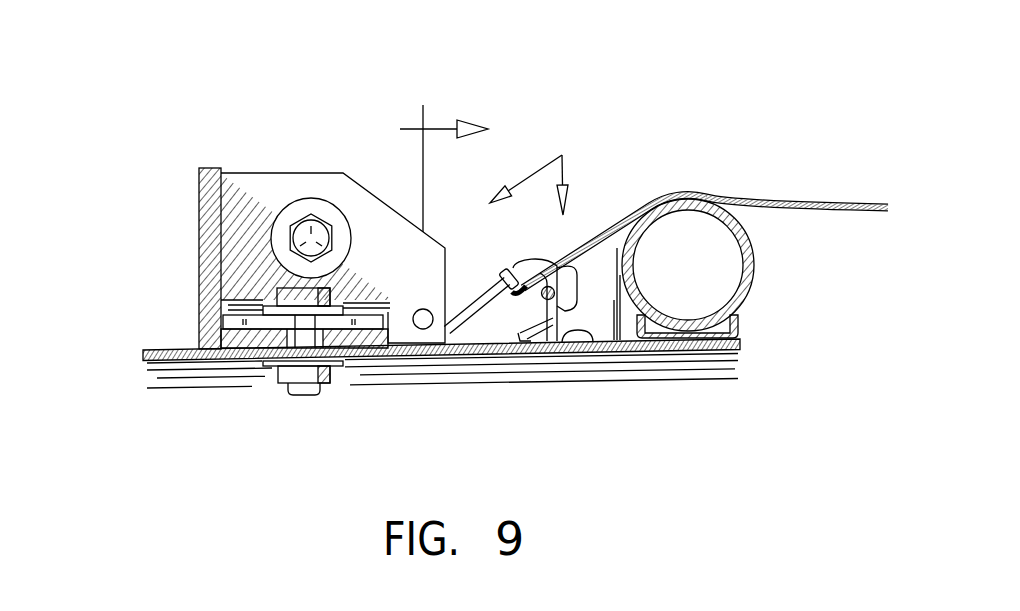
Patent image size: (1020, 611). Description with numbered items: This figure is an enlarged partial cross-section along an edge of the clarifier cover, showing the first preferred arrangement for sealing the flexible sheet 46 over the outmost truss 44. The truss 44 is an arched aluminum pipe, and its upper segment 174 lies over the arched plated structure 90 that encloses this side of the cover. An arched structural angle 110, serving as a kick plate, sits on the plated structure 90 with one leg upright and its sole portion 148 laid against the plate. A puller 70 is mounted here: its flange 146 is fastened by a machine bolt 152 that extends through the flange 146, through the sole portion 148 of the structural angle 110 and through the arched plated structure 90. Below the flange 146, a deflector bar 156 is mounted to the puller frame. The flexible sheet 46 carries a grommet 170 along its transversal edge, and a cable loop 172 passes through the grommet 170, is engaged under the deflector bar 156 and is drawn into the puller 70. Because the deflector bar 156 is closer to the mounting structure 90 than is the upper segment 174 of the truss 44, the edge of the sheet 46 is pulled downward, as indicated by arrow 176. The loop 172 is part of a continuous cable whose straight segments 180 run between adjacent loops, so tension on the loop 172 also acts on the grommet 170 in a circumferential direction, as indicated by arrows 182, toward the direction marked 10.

The direction of travel arrow 10 is at (469, 159).
The truss 44 is at (748, 290).
The flexible sheet 46 is at (855, 203).
The puller 70 is at (290, 172).
The arched plated structure 90 is at (174, 348).
The arched structural angle 110 is at (198, 205).
The flange 146 is at (373, 310).
The sole portion 148 is at (238, 342).
The machine bolt 152 is at (302, 397).
The deflector bar 156 is at (427, 330).
The grommet 170 is at (562, 262).
The cable loop 172 is at (480, 311).
The upper segment 174 is at (689, 194).
The arrow 176 is at (562, 155).
The straight segment 180 is at (547, 300).
The arrow 182 is at (562, 167).